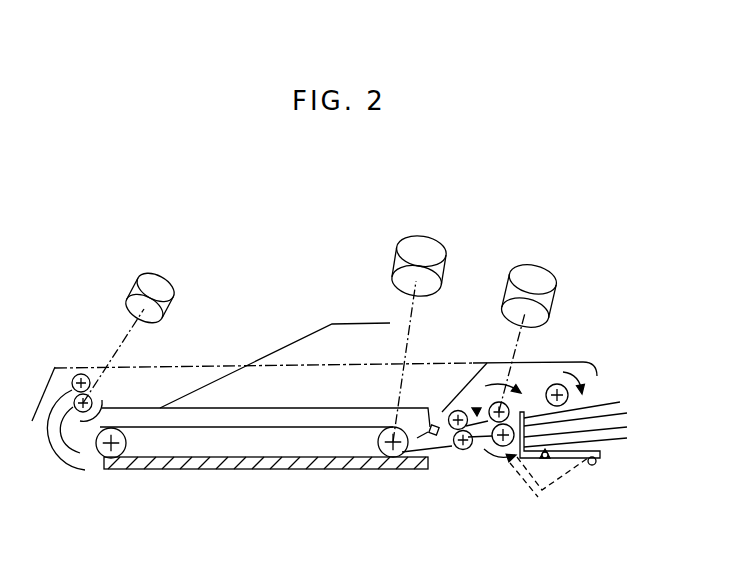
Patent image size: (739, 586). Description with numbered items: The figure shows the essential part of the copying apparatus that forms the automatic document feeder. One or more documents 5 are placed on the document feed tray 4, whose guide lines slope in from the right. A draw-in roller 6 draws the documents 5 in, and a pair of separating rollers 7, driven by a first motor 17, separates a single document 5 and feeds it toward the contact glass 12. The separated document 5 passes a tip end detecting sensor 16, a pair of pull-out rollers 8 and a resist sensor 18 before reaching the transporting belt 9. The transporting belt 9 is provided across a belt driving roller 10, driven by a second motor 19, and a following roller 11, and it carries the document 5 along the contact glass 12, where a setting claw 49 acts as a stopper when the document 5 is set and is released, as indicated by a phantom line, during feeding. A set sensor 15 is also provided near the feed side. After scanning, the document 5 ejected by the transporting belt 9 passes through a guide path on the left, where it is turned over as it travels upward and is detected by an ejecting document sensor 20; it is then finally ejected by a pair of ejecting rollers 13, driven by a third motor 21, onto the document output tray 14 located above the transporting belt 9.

The document feed tray 4 is at (604, 458).
The document 5 is at (610, 402).
The draw-in roller 6 is at (557, 384).
The separating rollers 7 is at (499, 401).
The pull-out rollers 8 is at (455, 410).
The transporting belt 9 is at (337, 426).
The belt driving roller 10 is at (391, 457).
The following roller 11 is at (104, 456).
The contact glass 12 is at (322, 471).
The ejecting rollers 13 is at (80, 370).
The document output tray 14 is at (290, 344).
The set sensor 15 is at (546, 460).
The tip end detecting sensor 16 is at (477, 407).
The first motor 17 is at (532, 272).
The resist sensor 18 is at (434, 424).
The second motor 19 is at (430, 250).
The ejecting document sensor 20 is at (72, 432).
The third motor 21 is at (146, 280).
The setting claw 49 is at (505, 455).